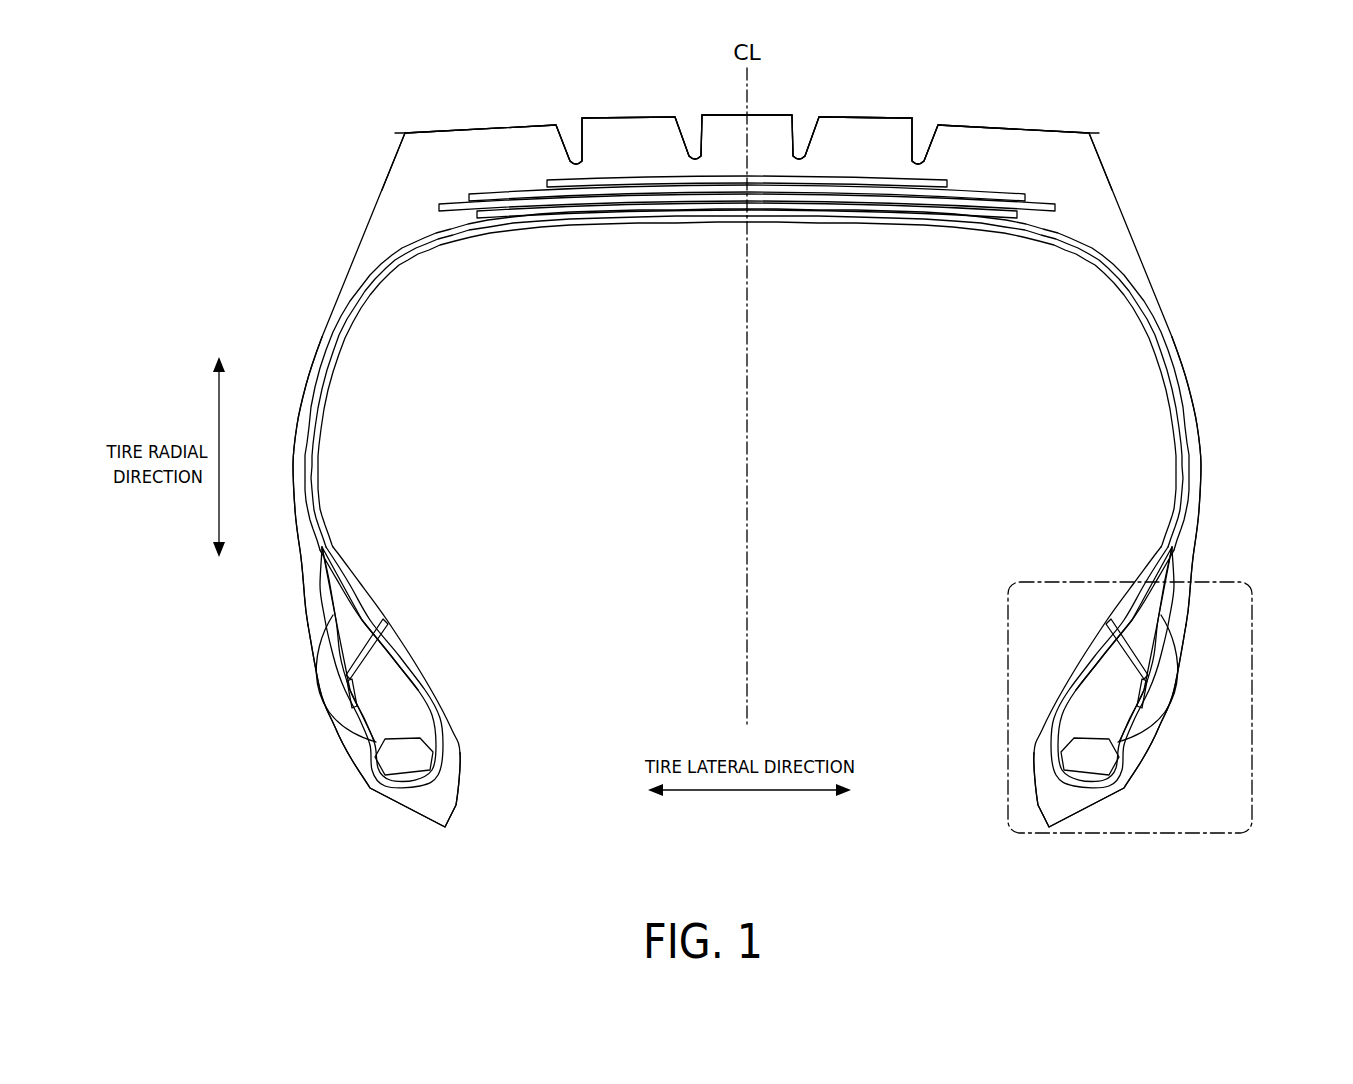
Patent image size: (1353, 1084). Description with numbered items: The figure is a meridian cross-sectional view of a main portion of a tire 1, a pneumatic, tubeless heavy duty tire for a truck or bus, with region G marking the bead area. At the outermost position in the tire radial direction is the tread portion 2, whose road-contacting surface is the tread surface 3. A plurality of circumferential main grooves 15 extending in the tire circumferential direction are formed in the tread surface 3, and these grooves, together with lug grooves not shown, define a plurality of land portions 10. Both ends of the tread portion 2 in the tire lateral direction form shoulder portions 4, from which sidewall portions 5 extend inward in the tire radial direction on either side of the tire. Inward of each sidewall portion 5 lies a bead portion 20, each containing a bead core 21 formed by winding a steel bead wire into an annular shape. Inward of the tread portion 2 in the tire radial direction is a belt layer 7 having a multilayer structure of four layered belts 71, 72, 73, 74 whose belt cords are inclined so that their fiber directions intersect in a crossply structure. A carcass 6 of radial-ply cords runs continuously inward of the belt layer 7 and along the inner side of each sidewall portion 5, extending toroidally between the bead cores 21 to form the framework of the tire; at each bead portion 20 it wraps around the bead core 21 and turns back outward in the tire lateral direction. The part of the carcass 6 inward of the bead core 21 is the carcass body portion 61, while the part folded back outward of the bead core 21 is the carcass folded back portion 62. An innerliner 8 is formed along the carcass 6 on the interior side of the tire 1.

The tire 1 is at (1166, 98).
The tread portion 2 is at (892, 129).
The tread surface 3 is at (872, 106).
The shoulder portion 4 is at (400, 135).
The sidewall portion 5 is at (292, 443).
The carcass 6 is at (1095, 262).
The belt layer 7 is at (747, 247).
The belt 71 is at (882, 280).
The belt 72 is at (960, 196).
The belt 73 is at (923, 186).
The belt 74 is at (895, 178).
The innerliner 8 is at (1166, 386).
The land portion 10 is at (489, 128).
The circumferential main groove 15 is at (565, 142).
The bead portion 20 is at (320, 703).
The bead core 21 is at (395, 757).
The carcass body portion 61 is at (375, 655).
The carcass folded back portion 62 is at (348, 677).
The bead region detail G is at (1253, 601).